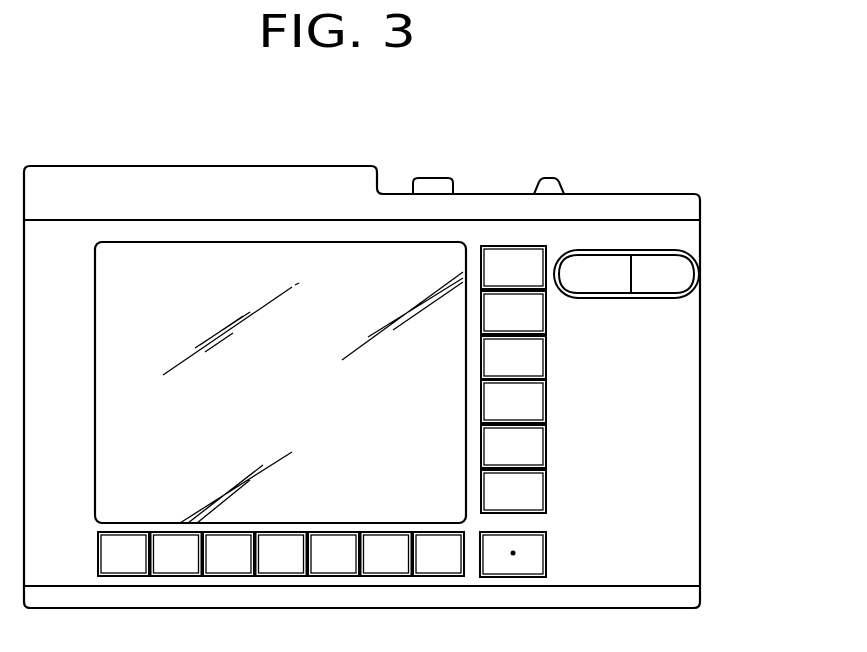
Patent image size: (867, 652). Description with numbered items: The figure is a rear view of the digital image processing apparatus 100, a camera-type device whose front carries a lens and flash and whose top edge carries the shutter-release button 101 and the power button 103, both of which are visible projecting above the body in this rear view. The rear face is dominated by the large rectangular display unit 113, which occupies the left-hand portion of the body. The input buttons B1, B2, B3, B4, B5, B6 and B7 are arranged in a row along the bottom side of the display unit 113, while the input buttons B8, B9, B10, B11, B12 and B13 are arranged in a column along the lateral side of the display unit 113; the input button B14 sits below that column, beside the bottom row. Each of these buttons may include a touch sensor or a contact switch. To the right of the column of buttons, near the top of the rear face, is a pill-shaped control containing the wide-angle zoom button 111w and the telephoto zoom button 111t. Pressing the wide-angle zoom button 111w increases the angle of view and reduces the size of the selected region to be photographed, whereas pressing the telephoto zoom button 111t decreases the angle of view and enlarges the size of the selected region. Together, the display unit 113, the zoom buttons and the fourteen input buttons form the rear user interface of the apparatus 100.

The digital image processing apparatus 100 is at (641, 151).
The shutter-release button 101 is at (548, 180).
The power button 103 is at (433, 180).
The display unit 113 is at (173, 257).
The wide-angle zoom button 111w is at (595, 274).
The telephoto zoom button 111t is at (662, 274).
The input button B1 is at (123, 554).
The input button B2 is at (176, 554).
The input button B3 is at (228, 554).
The input button B4 is at (281, 554).
The input button B5 is at (333, 554).
The input button B6 is at (386, 554).
The input button B7 is at (438, 554).
The input button B8 is at (513, 267).
The input button B9 is at (513, 312).
The input button B10 is at (513, 357).
The input button B11 is at (513, 401).
The input button B12 is at (513, 446).
The input button B13 is at (513, 491).
The input button B14 is at (546, 553).